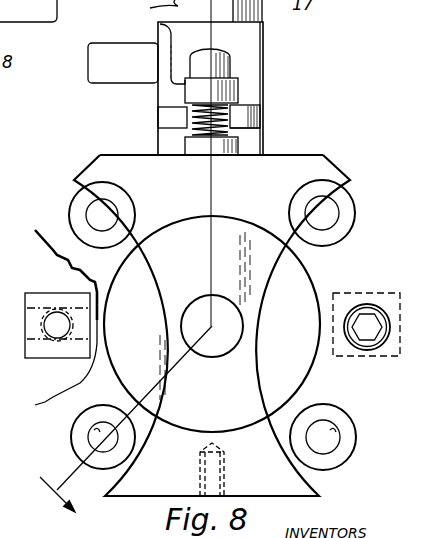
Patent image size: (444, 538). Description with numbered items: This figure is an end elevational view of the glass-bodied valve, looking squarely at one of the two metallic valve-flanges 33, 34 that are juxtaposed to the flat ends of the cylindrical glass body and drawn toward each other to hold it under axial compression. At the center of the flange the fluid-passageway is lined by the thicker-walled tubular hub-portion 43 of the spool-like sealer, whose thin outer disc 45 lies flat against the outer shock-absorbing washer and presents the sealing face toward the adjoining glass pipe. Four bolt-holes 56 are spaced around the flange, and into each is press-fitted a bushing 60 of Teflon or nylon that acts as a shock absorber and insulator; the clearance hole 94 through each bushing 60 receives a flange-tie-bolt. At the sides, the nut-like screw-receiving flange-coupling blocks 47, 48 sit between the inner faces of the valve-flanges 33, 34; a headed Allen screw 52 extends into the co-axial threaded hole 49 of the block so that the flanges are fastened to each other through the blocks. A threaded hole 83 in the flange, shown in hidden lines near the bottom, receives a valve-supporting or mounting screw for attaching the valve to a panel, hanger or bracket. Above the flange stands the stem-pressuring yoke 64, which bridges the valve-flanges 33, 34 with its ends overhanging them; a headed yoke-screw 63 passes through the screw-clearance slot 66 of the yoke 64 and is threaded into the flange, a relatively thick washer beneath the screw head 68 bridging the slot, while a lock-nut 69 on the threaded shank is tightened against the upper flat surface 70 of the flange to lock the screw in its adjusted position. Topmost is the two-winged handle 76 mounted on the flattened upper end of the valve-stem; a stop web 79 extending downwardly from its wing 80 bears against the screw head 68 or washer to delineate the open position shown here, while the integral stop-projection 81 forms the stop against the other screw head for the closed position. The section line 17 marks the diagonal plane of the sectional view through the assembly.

The section line 17- 17 is at (126, 427).
The metallic valve-flange 33 is at (40, 403).
The metallic valve-flange 34 is at (322, 497).
The tubular hub-portion 43 is at (235, 305).
The outer disc 45 is at (253, 445).
The flange-coupling block 47 is at (44, 352).
The flange-coupling block 48 is at (384, 293).
The threaded hole 49 is at (60, 318).
The headed Allen screw 52 is at (365, 350).
The bolt-hole 56 is at (124, 196).
The bushing 60 is at (82, 203).
The headed yoke-screw 63 is at (190, 117).
The stem-pressuring yoke 64 is at (250, 120).
The screw-clearance slot 66 is at (240, 95).
The screw head 68 is at (232, 62).
The lock-nut 69 is at (190, 148).
The upper flat surface 70 is at (297, 140).
The two-winged handle 76 is at (245, 38).
The stop web 79 is at (170, 78).
The wing 80 is at (150, 9).
The stop-projection 81 is at (114, 30).
The threaded hole 83 is at (227, 476).
The clearance hole 94 is at (35, 300).